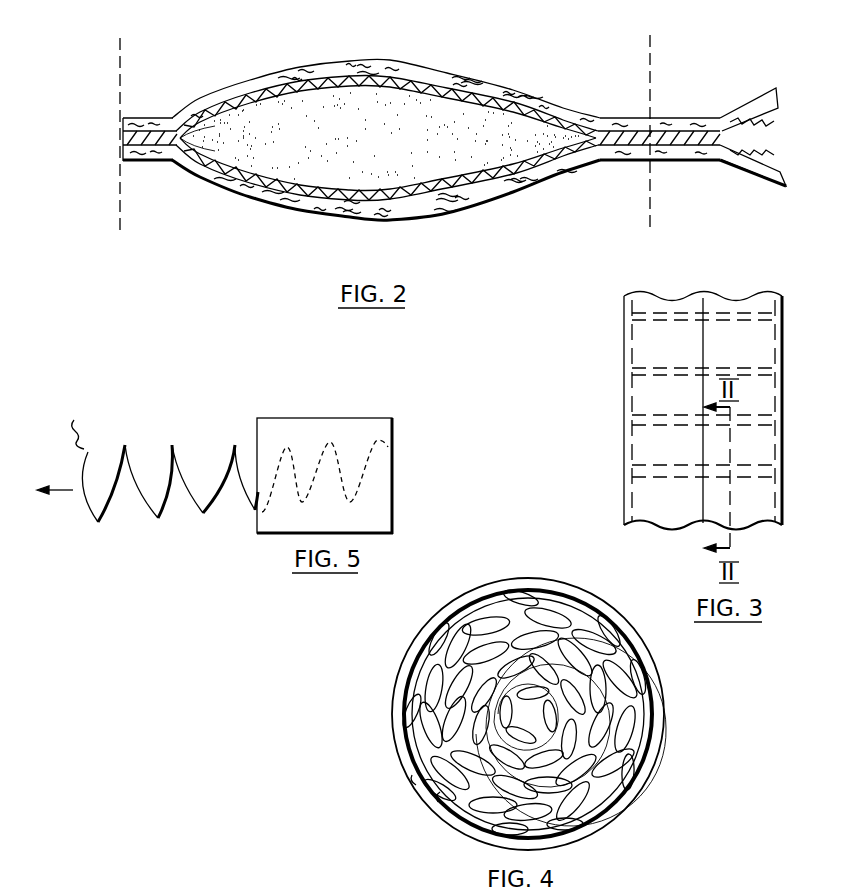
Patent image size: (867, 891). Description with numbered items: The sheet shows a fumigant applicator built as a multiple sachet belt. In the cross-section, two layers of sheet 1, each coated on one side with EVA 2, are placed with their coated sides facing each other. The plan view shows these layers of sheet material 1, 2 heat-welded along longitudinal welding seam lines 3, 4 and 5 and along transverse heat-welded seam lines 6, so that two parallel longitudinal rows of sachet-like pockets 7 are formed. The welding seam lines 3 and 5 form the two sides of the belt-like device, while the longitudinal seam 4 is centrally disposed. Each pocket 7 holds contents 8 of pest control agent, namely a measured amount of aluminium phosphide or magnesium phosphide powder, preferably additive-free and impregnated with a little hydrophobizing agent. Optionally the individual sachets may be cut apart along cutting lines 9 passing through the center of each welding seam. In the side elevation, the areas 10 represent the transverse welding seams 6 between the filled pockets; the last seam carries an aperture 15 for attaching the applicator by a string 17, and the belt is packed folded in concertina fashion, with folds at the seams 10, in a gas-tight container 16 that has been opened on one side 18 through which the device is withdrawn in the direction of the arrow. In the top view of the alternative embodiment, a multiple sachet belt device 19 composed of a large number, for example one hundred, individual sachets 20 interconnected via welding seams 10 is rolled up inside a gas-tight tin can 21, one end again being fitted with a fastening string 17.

In FIG. 2, the sheet 1 is at (438, 72).
In FIG. 3, the sheet 1 is at (724, 305).
In FIG. 2, the EVA coating 2 is at (278, 96).
In FIG. 3, the EVA coating 2 is at (724, 305).
In FIG. 2, the longitudinal welding seam line 3 is at (500, 100).
In FIG. 3, the longitudinal welding seam line 3 is at (617, 347).
In FIG. 3, the central longitudinal welding seam 4 is at (706, 343).
In FIG. 3, the longitudinal welding seam line 5 is at (784, 347).
In FIG. 2, the transverse heat-welded seam line 6 is at (143, 118).
In FIG. 3, the transverse heat-welded seam line 6 is at (660, 318).
In FIG. 2, the sachet-like pocket 7 is at (371, 148).
In FIG. 3, the sachet-like pocket 7 is at (655, 398).
In FIG. 2, the contents of pest control agent 8 is at (262, 148).
In FIG. 2, the cutting line 9 is at (118, 78).
In FIG. 4, the transverse welding seam area 10 is at (600, 787).
In FIG. 5, the transverse welding seam area 10 is at (172, 446).
In FIG. 5, the aperture 15 is at (88, 452).
In FIG. 5, the gas-tight container 16 is at (320, 419).
In FIG. 4, the thread 17 is at (432, 792).
In FIG. 5, the thread 17 is at (74, 420).
In FIG. 5, the opened side 18 is at (255, 448).
In FIG. 4, the multiple sachet belt device 19 is at (590, 700).
In FIG. 4, the individual sachet 20 is at (620, 746).
In FIG. 4, the gas-tight tin can 21 is at (598, 830).